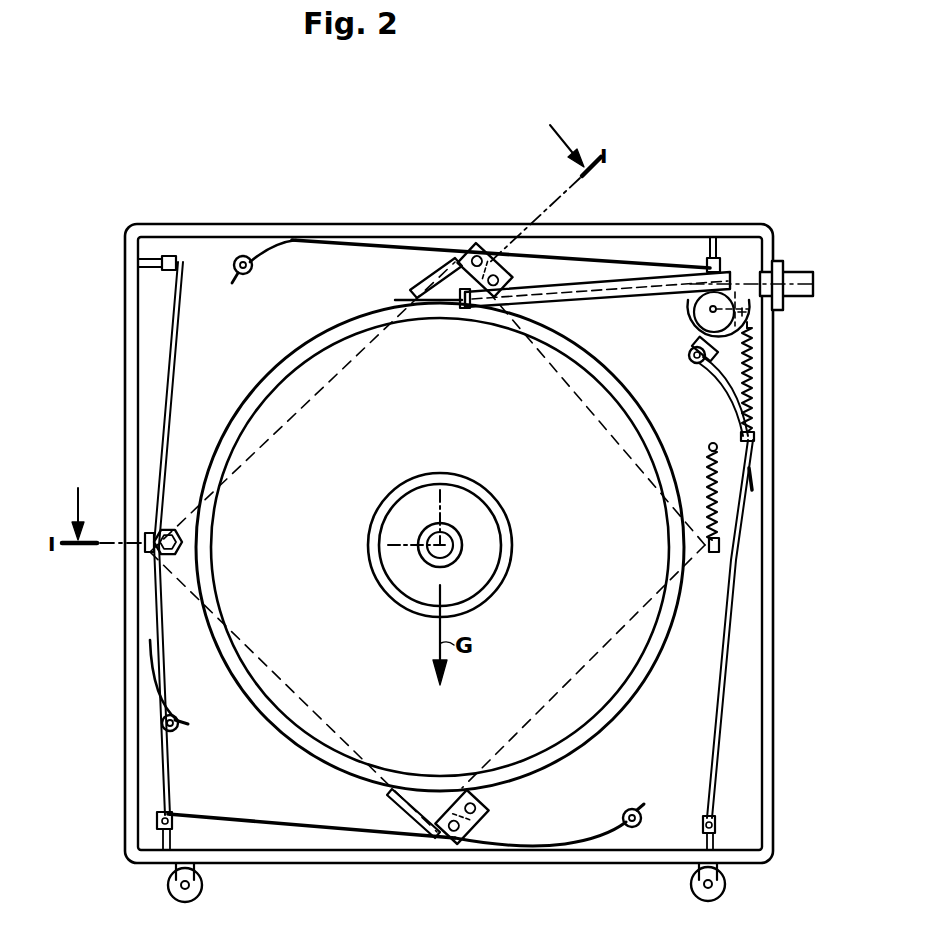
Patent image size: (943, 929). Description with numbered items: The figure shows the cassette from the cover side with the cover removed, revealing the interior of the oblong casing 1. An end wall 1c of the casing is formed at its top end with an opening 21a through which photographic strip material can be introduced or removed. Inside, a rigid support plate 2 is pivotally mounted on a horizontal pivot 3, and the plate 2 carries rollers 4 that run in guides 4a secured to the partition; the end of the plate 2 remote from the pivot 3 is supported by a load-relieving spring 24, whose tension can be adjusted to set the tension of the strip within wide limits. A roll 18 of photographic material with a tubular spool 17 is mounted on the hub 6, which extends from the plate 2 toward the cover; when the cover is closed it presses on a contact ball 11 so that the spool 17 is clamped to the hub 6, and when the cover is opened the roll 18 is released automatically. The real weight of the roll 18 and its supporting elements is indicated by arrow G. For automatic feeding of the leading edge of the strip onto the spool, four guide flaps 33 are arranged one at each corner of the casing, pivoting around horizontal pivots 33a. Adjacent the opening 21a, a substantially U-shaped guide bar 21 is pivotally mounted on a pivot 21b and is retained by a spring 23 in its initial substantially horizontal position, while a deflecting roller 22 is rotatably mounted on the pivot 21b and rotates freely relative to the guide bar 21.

The casing 1 is at (128, 246).
The end wall 1c is at (766, 451).
The support plate 2 is at (174, 522).
The pivot 3 is at (157, 553).
The rollers 4 is at (468, 258).
The guides 4a is at (498, 262).
The hub 6 is at (421, 497).
The contact ball 11 is at (432, 551).
The tubular spool 17 is at (378, 514).
The roll 18 is at (272, 388).
The guide bar 21 is at (630, 294).
The opening 21a is at (817, 278).
The pivot 21b is at (711, 310).
The deflecting roller 22 is at (713, 258).
The spring 23 is at (753, 376).
The load-relieving spring 24 is at (722, 489).
The guide flaps 33 is at (402, 241).
The horizontal pivots 33a is at (168, 256).